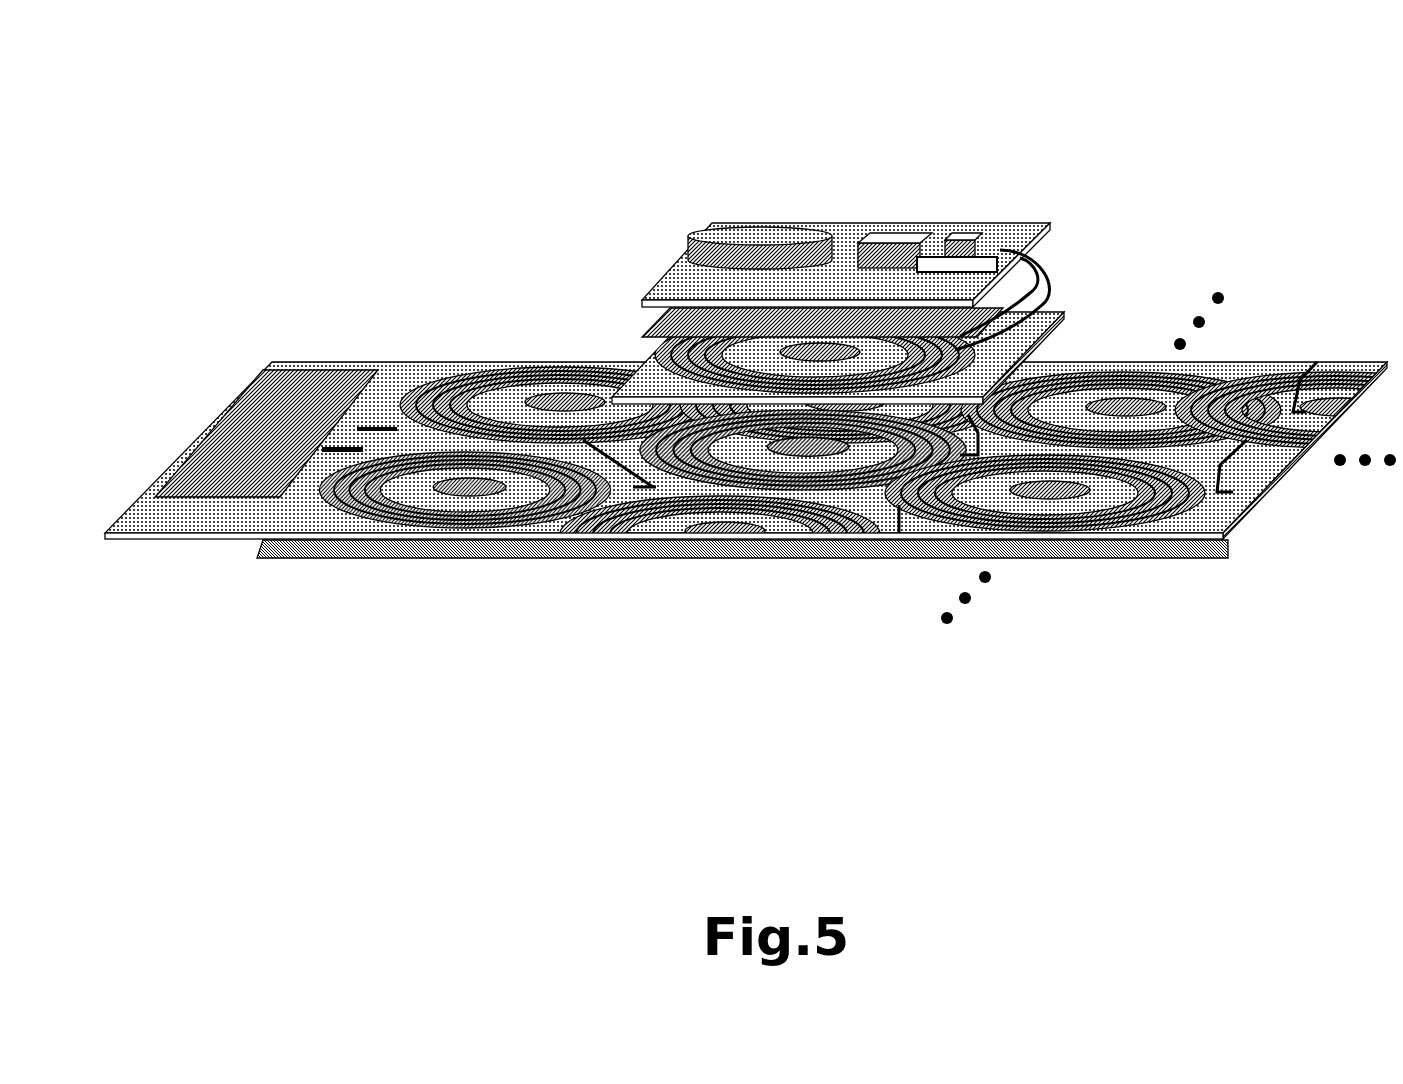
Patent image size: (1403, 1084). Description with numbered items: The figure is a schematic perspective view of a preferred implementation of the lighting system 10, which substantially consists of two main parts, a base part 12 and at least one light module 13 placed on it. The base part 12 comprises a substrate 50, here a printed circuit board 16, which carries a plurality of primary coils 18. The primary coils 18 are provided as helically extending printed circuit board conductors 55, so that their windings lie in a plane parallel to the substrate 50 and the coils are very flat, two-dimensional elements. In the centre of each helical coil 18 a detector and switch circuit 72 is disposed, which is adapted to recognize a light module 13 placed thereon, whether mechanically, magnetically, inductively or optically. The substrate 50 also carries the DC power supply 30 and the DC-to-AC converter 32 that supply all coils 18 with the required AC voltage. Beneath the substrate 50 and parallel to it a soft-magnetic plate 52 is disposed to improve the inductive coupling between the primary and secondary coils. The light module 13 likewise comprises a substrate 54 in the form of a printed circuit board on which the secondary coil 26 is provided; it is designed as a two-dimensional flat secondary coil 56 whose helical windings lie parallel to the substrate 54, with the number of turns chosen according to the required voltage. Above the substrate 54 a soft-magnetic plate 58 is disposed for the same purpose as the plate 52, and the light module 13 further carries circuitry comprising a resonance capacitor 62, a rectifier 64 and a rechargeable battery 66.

The lighting system 10 is at (1242, 116).
The base part 12 is at (754, 586).
The light module 13 is at (837, 259).
The substrate board 16 is at (1286, 372).
The primary coil 18 is at (861, 486).
The secondary coil 26 is at (746, 353).
The DC power supply 30 is at (276, 395).
The DC-to-AC converter 32 is at (312, 368).
The substrate 50 is at (1280, 494).
The soft-magnetic plate 52 is at (1232, 558).
The substrate 54 is at (837, 355).
The coil trace 55 is at (921, 522).
The two-dimensional flat secondary coil 56 is at (652, 357).
The soft-magnetic plate 58 is at (890, 254).
The resonance capacitor 62 is at (973, 233).
The rectifier 64 is at (884, 233).
The rechargeable battery 66 is at (770, 228).
The detector and switch circuit 72 is at (1050, 498).